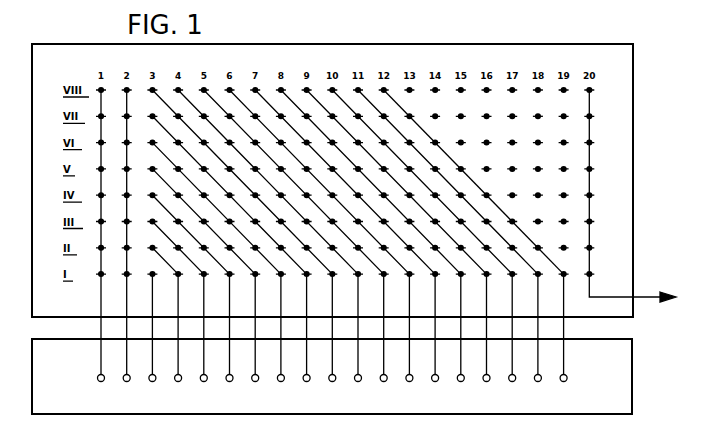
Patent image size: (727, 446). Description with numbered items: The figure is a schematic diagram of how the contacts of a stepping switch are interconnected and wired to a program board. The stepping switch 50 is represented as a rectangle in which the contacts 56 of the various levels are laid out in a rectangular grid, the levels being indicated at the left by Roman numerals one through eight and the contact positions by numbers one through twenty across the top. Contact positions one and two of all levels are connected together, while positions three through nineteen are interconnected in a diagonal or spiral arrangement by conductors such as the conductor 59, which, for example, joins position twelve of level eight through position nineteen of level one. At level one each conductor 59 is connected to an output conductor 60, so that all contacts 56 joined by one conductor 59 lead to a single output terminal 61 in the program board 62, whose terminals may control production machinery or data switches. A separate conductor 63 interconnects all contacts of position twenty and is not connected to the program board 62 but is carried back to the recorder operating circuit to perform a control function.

The stepping switch 50 is at (403, 45).
The contacts 56 is at (538, 117).
The conductor 59 is at (470, 178).
The output conductor 60 is at (565, 328).
The output terminals 61 is at (566, 381).
The program board 62 is at (632, 397).
The conductor 63 is at (643, 297).